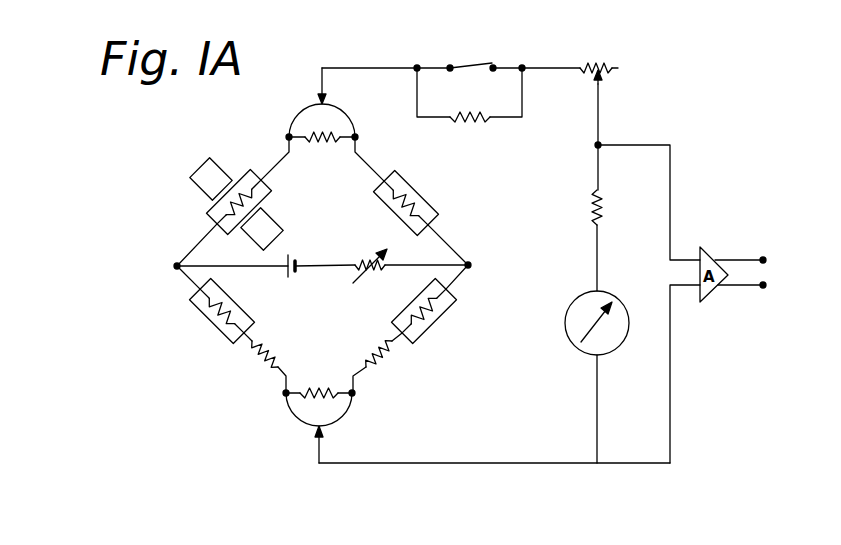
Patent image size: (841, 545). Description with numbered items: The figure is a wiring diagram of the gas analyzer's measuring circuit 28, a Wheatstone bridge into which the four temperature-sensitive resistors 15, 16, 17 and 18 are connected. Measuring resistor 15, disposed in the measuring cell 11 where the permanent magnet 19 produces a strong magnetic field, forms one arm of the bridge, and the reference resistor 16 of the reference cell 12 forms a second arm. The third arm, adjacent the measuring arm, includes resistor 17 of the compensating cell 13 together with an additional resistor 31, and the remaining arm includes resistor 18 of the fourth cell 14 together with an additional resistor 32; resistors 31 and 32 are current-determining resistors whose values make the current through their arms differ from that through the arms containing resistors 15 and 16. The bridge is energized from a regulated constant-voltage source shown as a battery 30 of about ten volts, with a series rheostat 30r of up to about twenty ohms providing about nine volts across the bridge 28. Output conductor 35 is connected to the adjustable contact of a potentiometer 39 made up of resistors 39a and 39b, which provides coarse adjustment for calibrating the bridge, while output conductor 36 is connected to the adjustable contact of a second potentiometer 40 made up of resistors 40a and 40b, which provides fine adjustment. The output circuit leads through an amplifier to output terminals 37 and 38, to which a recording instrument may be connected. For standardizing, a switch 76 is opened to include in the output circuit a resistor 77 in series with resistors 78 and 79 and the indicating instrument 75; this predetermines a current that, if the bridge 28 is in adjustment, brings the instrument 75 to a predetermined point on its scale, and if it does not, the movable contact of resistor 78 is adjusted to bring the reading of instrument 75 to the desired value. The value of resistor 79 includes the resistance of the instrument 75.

The measuring cell 11 is at (258, 178).
The reference cell 12 is at (396, 168).
The compensating cell 13 is at (190, 301).
The fourth cell 14 is at (405, 338).
The temperature-sensitive resistor 15 is at (227, 212).
The temperature-sensitive resistor 16 is at (399, 197).
The temperature-sensitive resistor 17 is at (225, 315).
The temperature-sensitive resistor 18 is at (428, 307).
The permanent magnet 19 is at (197, 172).
The measuring circuit 28 is at (320, 327).
The battery 30 is at (297, 257).
The series rheostat 30r is at (373, 275).
The additional resistor 31 is at (263, 362).
The additional resistor 32 is at (381, 359).
The output conductor 35 is at (375, 66).
The output conductor 36 is at (355, 465).
The output terminal 37 is at (763, 257).
The output terminal 38 is at (763, 288).
The potentiometer 39 is at (317, 118).
The resistor 39a is at (360, 104).
The resistor 39b is at (318, 141).
The second potentiometer 40 is at (332, 411).
The resistor 40a is at (292, 412).
The resistor 40b is at (317, 387).
The indicating instrument 75 is at (578, 344).
The switch 76 is at (466, 65).
The resistor 77 is at (477, 124).
The resistor 78 is at (600, 64).
The resistor 79 is at (593, 212).